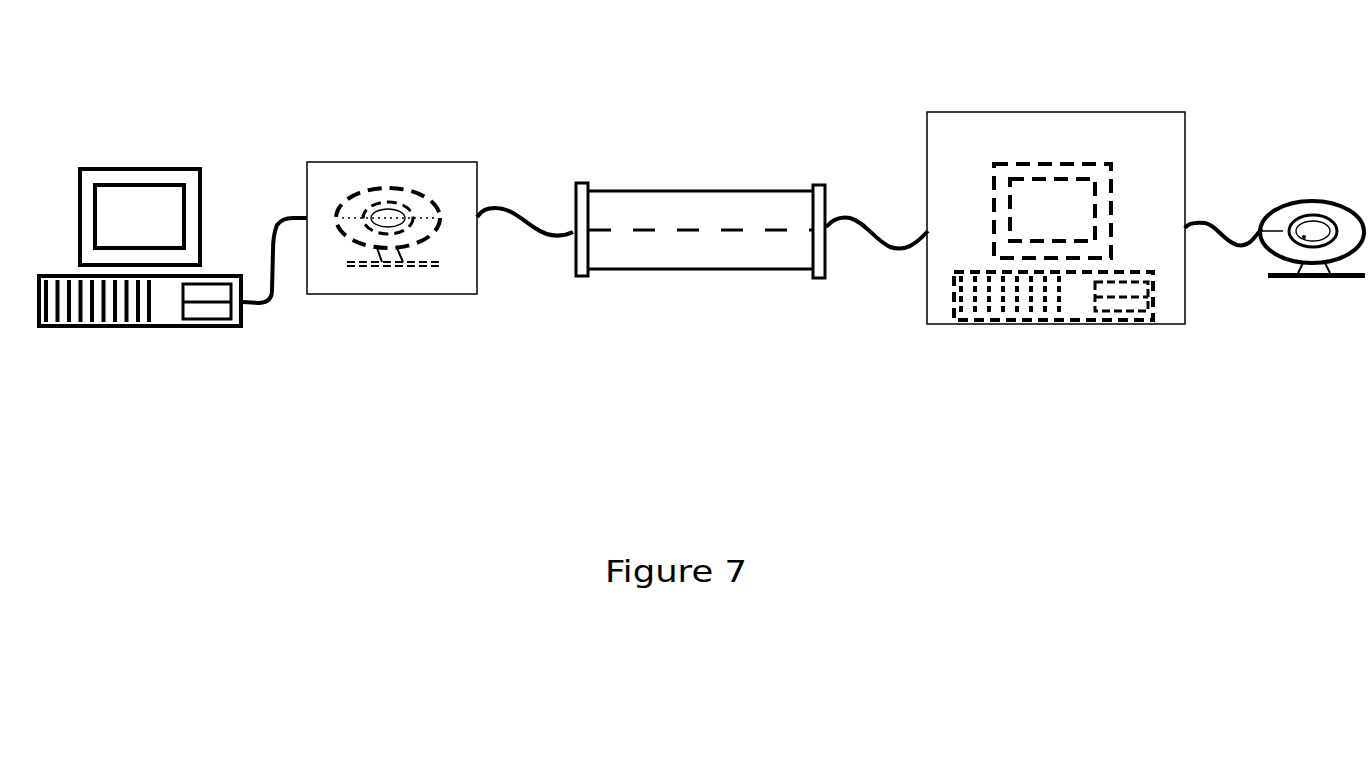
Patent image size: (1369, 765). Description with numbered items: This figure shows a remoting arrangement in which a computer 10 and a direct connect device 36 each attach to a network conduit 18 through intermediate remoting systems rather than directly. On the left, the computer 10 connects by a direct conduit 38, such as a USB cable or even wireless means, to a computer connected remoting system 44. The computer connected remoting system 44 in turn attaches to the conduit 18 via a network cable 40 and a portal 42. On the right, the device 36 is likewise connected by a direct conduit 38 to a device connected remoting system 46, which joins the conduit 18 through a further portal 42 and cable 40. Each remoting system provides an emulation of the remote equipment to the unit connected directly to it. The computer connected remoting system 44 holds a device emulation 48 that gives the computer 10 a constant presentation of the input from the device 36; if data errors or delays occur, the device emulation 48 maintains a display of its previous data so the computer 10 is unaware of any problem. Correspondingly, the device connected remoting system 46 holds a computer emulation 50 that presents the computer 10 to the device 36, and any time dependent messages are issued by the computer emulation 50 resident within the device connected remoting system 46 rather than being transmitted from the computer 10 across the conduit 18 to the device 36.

The computer 10 is at (87, 167).
The conduit 18 is at (633, 190).
The direct connect device 36 is at (1343, 203).
The direct conduit 38 is at (268, 232).
The network cable 40 is at (488, 208).
The portal 42 is at (585, 181).
The computer connected remoting system 44 is at (372, 295).
The device connected remoting system 46 is at (1027, 325).
The device emulation 48 is at (351, 198).
The computer emulation 50 is at (1040, 155).